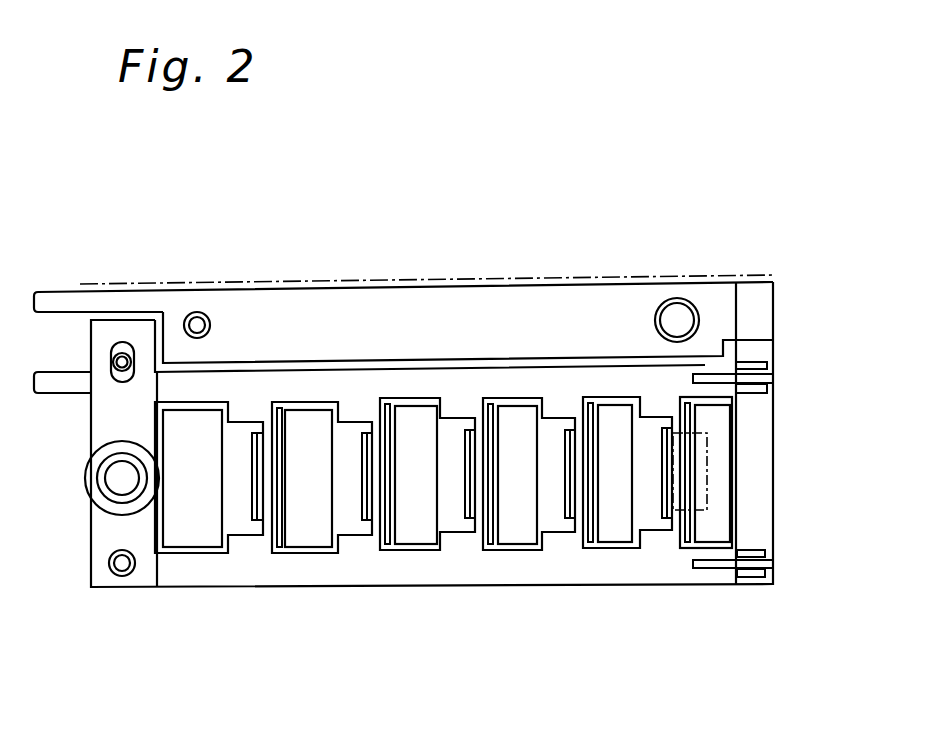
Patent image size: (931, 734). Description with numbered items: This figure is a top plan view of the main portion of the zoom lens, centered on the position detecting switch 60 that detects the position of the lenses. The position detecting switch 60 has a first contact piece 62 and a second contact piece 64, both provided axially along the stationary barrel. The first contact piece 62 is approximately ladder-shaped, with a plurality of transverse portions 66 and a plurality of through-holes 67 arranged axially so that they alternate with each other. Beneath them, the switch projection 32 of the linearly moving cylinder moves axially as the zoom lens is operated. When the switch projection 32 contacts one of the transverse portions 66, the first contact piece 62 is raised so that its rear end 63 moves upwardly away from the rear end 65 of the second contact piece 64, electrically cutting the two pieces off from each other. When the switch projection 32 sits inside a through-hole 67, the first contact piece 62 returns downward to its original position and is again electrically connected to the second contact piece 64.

The position detecting switch 60 is at (547, 172).
The first contact piece 62 is at (667, 377).
The rear end of the first contact piece 63 is at (776, 381).
The second contact piece 64 is at (542, 298).
The rear end of the second contact piece 65 is at (760, 468).
The transverse portions 66 is at (677, 432).
The through-holes 67 is at (457, 493).
The switch projection 32 is at (673, 512).